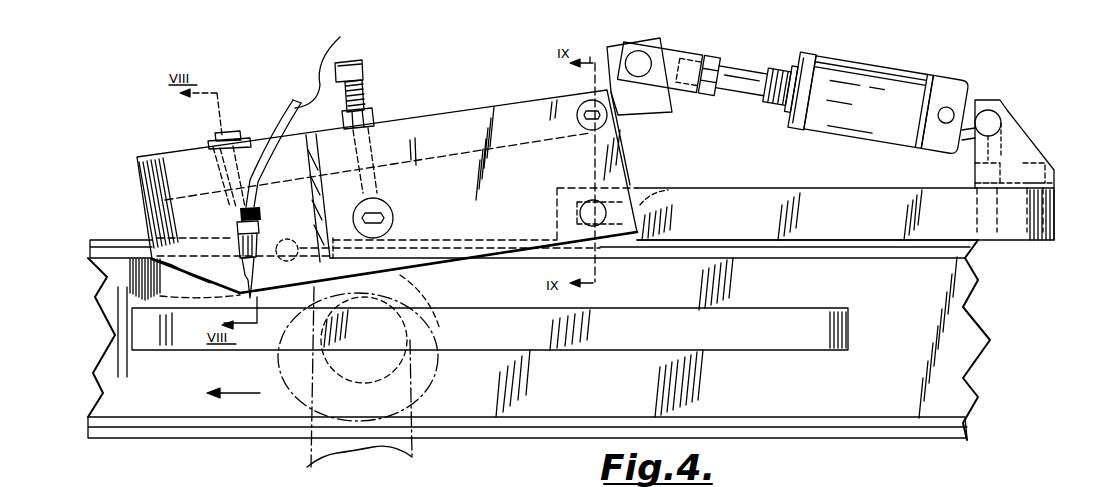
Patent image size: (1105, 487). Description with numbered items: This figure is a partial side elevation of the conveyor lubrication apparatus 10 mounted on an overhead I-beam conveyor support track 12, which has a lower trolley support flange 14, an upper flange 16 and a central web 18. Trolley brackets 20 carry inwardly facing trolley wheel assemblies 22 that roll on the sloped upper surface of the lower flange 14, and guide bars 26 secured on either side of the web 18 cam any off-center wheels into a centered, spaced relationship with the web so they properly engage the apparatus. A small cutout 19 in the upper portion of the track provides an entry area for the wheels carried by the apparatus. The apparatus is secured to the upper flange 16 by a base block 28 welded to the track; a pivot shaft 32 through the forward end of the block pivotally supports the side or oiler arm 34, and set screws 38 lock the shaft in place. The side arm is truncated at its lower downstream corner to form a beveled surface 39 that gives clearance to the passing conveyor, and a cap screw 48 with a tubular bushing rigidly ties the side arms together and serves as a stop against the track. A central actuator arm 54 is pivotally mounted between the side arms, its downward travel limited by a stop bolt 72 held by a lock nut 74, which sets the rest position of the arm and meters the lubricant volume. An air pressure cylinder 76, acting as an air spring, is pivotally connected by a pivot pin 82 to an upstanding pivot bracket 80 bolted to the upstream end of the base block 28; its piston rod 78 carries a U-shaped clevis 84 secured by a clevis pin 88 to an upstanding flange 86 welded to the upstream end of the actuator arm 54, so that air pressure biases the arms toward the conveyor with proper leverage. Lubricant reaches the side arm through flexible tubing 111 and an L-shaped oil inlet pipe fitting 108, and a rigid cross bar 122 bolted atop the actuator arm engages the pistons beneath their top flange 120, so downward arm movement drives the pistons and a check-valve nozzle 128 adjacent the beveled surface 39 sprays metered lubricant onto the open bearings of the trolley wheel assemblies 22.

The conveyor lubrication apparatus 10 is at (480, 60).
The overhead conveyor support track 12 is at (905, 444).
The lower trolley support flange 14 is at (881, 417).
The upper flange 16 is at (783, 252).
The central web 18 is at (934, 329).
The cutout 19 is at (330, 282).
The trolley brackets 20 is at (397, 385).
The trolley wheel assembly 22 is at (433, 330).
The guide bars 26 is at (731, 335).
The base block 28 is at (882, 223).
The pivot shaft 32 is at (598, 213).
The side arm 34 is at (519, 210).
The set screws 38 is at (665, 200).
The beveled surface 39 is at (150, 262).
The cap screw 48 is at (383, 218).
The actuator arm 54 is at (503, 127).
The stop bolt 72 is at (362, 71).
The lock nut 74 is at (372, 114).
The air pressure cylinder 76 is at (905, 40).
The piston rod 78 is at (747, 72).
The pivot bracket 80 is at (1020, 152).
The pivot pin 82 is at (988, 120).
The clevis 84 is at (684, 90).
The upstanding flange 86 is at (615, 45).
The clevis pin 88 is at (641, 58).
The oil inlet pipe fitting 108 is at (240, 232).
The flexible tubing 111 is at (321, 70).
The top flange 120 is at (225, 131).
The rigid cross bar 122 is at (246, 205).
The check-valve nozzle 128 is at (93, 300).